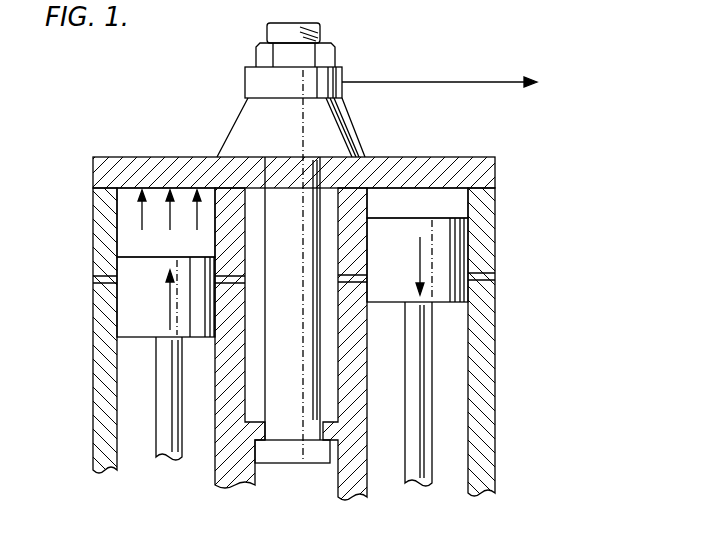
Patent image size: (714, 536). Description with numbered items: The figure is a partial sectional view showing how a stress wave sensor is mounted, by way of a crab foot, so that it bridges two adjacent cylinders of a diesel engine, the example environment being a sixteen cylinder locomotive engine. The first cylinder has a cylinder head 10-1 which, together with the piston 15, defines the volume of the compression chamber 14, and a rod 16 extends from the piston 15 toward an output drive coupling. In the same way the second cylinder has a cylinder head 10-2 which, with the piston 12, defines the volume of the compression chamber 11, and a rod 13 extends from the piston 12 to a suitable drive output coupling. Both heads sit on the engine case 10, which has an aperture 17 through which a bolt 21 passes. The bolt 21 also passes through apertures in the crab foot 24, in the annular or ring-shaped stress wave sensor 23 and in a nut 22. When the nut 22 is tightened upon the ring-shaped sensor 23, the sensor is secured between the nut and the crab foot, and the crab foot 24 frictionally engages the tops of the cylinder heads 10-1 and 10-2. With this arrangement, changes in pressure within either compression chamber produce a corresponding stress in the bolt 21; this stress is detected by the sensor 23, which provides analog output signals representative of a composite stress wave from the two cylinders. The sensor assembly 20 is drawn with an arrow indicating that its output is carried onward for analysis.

The engine case 10 is at (495, 408).
The cylinder head 10-1 is at (176, 165).
The cylinder head 10-2 is at (470, 170).
The compression chamber 11 is at (427, 211).
The piston 12 is at (455, 255).
The rod 13 is at (420, 363).
The compression chamber 14 is at (180, 252).
The piston 15 is at (130, 308).
The rod 16 is at (164, 416).
The aperture 17 is at (270, 432).
The valve body 20 is at (245, 82).
The bolt 21 is at (310, 30).
The nut 22 is at (258, 55).
The stress wave sensor 23 is at (346, 78).
The crab foot 24 is at (352, 124).